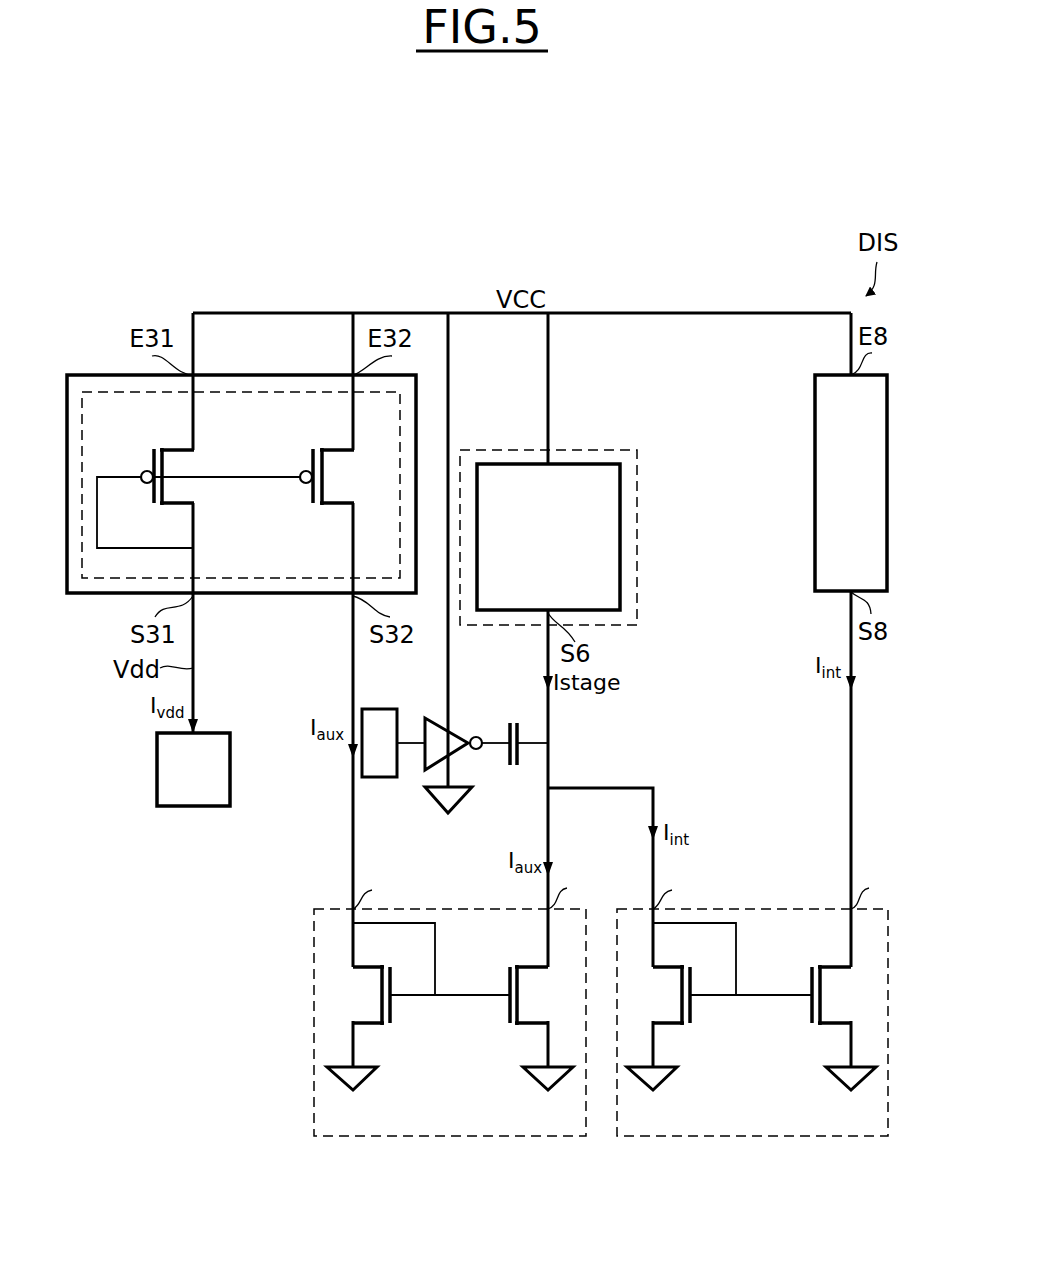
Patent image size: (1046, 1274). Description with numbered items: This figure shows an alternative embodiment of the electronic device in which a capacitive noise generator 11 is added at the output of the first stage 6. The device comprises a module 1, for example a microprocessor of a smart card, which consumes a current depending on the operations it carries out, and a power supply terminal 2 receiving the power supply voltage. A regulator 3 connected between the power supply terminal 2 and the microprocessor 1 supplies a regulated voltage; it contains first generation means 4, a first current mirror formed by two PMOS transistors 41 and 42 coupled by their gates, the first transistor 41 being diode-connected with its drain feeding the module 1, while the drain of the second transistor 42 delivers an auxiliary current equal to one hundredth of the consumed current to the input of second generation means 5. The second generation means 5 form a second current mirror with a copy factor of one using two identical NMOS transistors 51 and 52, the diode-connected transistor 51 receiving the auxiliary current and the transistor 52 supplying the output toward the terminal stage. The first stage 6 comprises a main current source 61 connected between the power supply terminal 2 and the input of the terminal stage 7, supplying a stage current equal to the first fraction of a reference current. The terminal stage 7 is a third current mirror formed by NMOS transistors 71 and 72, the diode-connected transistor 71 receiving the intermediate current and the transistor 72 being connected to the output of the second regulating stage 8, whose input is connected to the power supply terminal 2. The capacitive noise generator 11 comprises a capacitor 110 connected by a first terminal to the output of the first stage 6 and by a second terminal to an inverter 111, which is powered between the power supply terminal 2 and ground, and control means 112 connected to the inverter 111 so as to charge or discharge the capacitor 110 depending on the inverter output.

The module 1 is at (157, 770).
The power supply terminal 2 is at (193, 313).
The regulator 3 is at (93, 375).
The first generation means 4 is at (263, 392).
The first transistor 41 is at (207, 492).
The second transistor 42 is at (367, 492).
The second generation means 5 is at (443, 909).
The first NMOS transistor 51 is at (346, 993).
The second NMOS transistor 52 is at (554, 993).
The first stage 6 is at (572, 537).
The main current source 61 is at (620, 537).
The terminal stage 7 is at (745, 909).
The third transistor 71 is at (646, 993).
The fourth transistor 72 is at (856, 993).
The second regulating stage 8 is at (887, 483).
The capacitive noise generator 11 is at (455, 573).
The capacitor 110 is at (503, 766).
The inverter 111 is at (425, 765).
The control means 112 is at (380, 709).